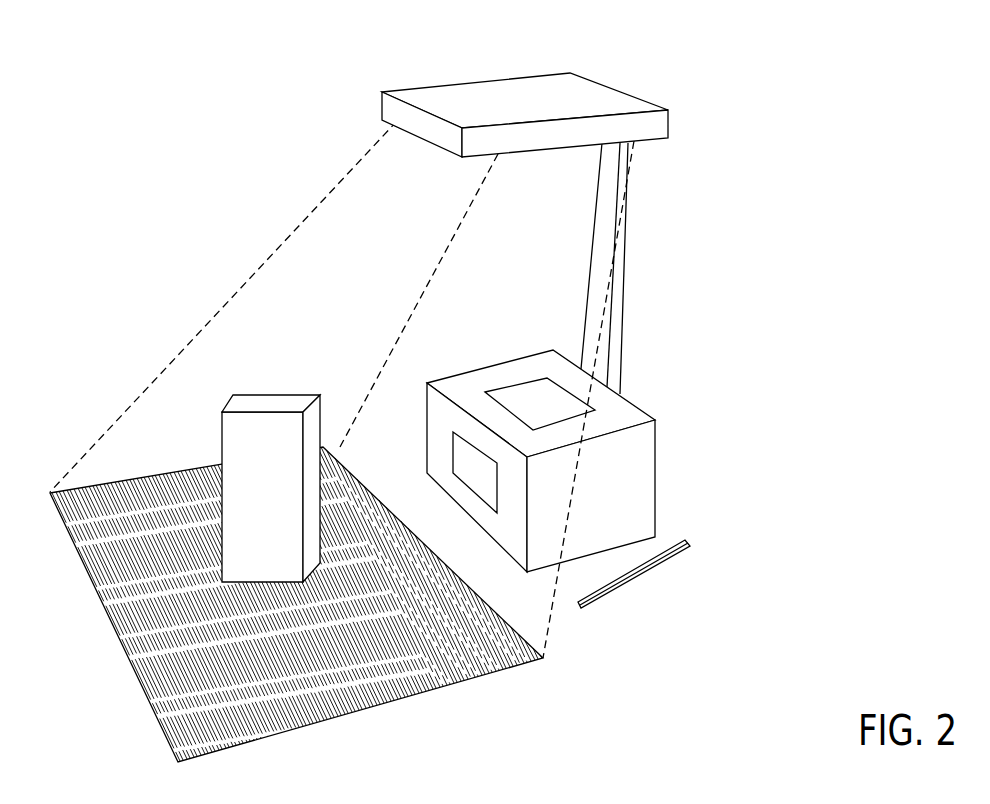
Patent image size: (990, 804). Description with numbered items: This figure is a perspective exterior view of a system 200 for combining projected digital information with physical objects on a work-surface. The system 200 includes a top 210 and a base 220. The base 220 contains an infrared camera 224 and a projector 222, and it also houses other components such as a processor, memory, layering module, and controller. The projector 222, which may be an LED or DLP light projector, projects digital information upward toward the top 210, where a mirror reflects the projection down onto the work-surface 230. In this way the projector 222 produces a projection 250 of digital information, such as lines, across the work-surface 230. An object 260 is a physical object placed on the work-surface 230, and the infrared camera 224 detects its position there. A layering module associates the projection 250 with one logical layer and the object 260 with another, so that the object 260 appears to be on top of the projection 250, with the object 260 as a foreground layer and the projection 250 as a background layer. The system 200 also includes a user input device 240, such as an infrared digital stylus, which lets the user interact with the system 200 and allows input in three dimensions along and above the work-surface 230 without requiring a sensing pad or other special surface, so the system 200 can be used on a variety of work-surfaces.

The system 200 is at (762, 205).
The top 210 is at (622, 82).
The base 220 is at (640, 408).
The projector 222 is at (535, 398).
The infrared camera 224 is at (473, 463).
The work-surface 230 is at (433, 692).
The user input device 240 is at (637, 592).
The projection 250 is at (168, 688).
The object 260 is at (280, 508).